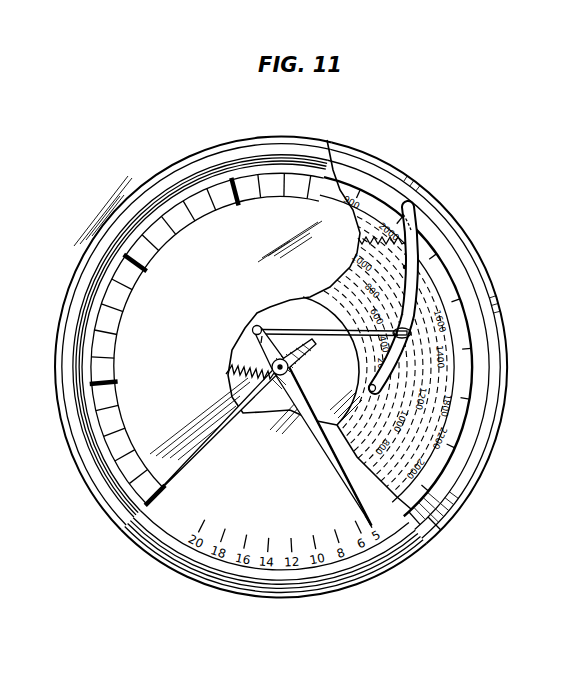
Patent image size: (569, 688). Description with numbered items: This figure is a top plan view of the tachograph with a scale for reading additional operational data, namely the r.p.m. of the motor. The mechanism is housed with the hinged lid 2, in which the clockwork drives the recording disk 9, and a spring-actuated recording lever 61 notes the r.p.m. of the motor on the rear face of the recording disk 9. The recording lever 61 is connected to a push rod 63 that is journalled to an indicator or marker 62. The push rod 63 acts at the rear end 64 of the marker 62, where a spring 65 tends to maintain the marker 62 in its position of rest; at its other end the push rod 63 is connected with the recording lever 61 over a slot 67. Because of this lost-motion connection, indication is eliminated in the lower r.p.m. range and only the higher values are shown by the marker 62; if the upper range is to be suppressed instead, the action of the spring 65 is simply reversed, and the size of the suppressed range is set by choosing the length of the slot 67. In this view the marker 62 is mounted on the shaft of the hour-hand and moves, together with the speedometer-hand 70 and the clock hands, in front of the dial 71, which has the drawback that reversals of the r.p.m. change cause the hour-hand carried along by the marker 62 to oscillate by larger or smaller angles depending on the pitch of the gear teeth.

The hinged lid 2 is at (138, 541).
The recording disk 9 is at (448, 456).
The recording lever 61 is at (417, 248).
The marker 62 is at (333, 465).
The push rod 63 is at (332, 337).
The rear end of the marker 64 is at (256, 325).
The spring 65 is at (236, 356).
The slot 67 is at (411, 333).
The speedometer-hand 70 is at (211, 437).
The dial 71 is at (110, 440).